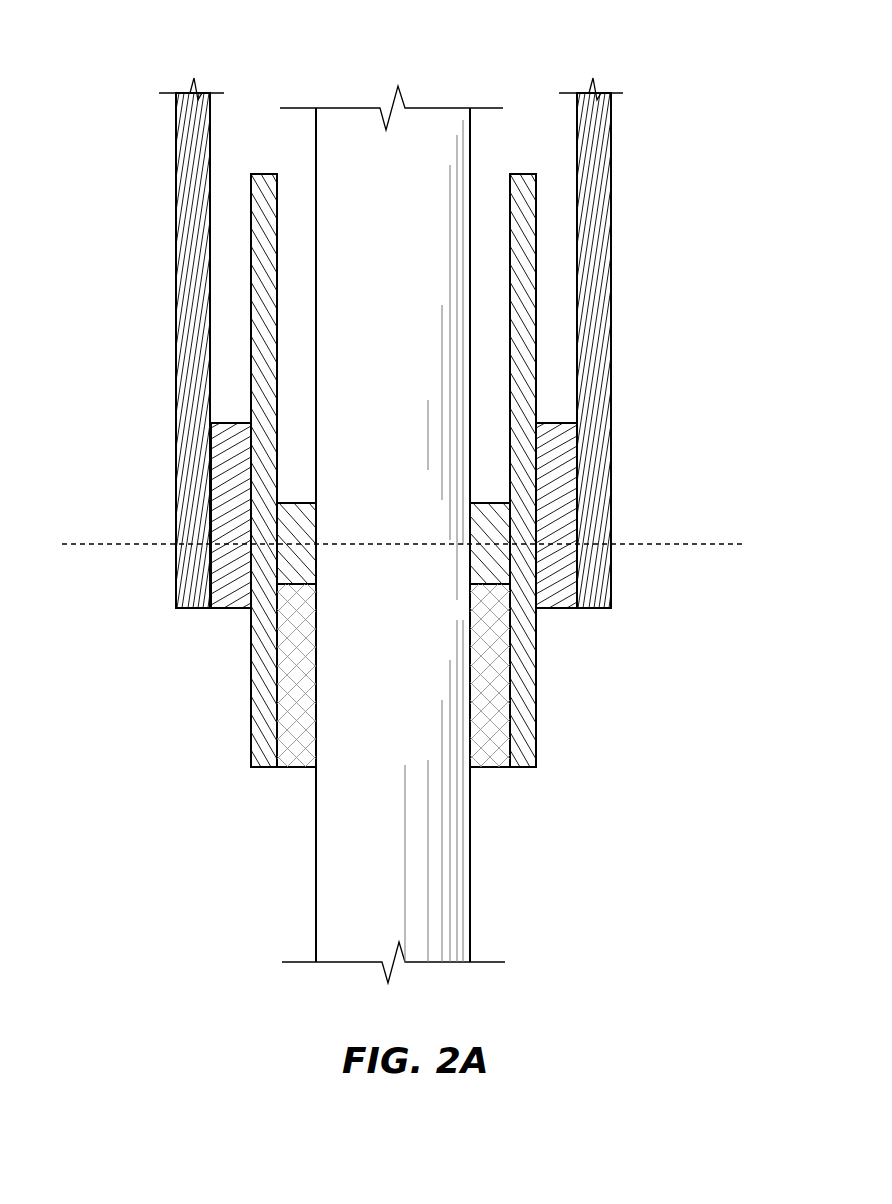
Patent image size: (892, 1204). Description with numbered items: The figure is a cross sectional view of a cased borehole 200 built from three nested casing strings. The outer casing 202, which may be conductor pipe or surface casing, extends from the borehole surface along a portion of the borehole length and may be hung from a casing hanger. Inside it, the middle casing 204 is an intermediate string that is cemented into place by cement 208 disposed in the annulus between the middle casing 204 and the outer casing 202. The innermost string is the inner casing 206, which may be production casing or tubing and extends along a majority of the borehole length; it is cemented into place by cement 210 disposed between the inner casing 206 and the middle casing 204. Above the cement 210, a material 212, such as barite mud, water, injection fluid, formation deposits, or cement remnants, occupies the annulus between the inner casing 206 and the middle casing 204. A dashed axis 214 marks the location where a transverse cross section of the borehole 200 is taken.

The borehole 200 is at (125, 44).
The outer casing 202 is at (183, 142).
The middle casing 204 is at (251, 690).
The inner casing 206 is at (315, 832).
The cement 208 is at (230, 610).
The cement 210 is at (295, 768).
The material 212 is at (316, 525).
The axis 214 is at (655, 545).